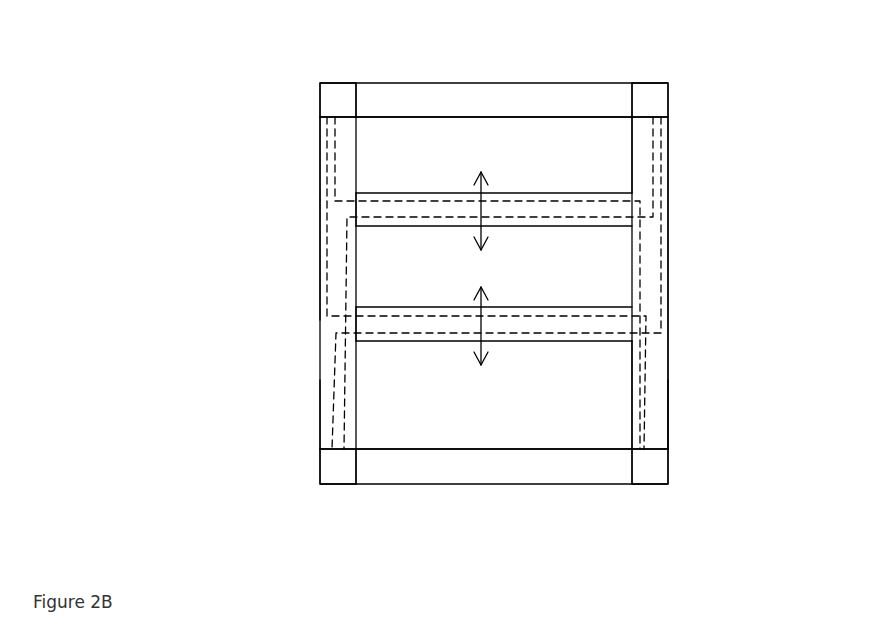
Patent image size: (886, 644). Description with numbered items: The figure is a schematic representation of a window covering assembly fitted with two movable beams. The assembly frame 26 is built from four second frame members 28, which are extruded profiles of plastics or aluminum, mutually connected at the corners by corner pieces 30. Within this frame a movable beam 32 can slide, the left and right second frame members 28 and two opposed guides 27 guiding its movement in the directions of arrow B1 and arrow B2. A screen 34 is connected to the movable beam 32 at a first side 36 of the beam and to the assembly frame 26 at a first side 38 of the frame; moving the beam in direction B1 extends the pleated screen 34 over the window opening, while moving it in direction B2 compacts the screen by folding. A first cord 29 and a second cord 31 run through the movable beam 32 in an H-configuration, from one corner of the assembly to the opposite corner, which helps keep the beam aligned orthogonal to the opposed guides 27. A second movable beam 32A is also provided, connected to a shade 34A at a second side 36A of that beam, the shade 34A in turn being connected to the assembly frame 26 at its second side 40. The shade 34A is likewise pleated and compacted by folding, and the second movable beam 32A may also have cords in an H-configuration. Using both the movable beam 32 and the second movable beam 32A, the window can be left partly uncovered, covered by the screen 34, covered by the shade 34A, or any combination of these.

The assembly frame 26 is at (669, 158).
The opposed guides 27 is at (336, 268).
The second frame members 28 is at (483, 88).
The first cord 29 is at (333, 150).
The corner pieces 30 is at (330, 92).
The second cord 31 is at (345, 407).
The movable beam 32 is at (625, 202).
The second movable beam 32A is at (623, 315).
The screen 34 is at (618, 145).
The shade 34A is at (608, 373).
The first side of the movable beam 36 is at (370, 192).
The second side of the second movable beam 36A is at (370, 343).
The first side of the assembly frame 38 is at (542, 117).
The second side of the assembly frame 40 is at (559, 450).
The arrow B1 is at (492, 304).
The arrow B2 is at (492, 206).